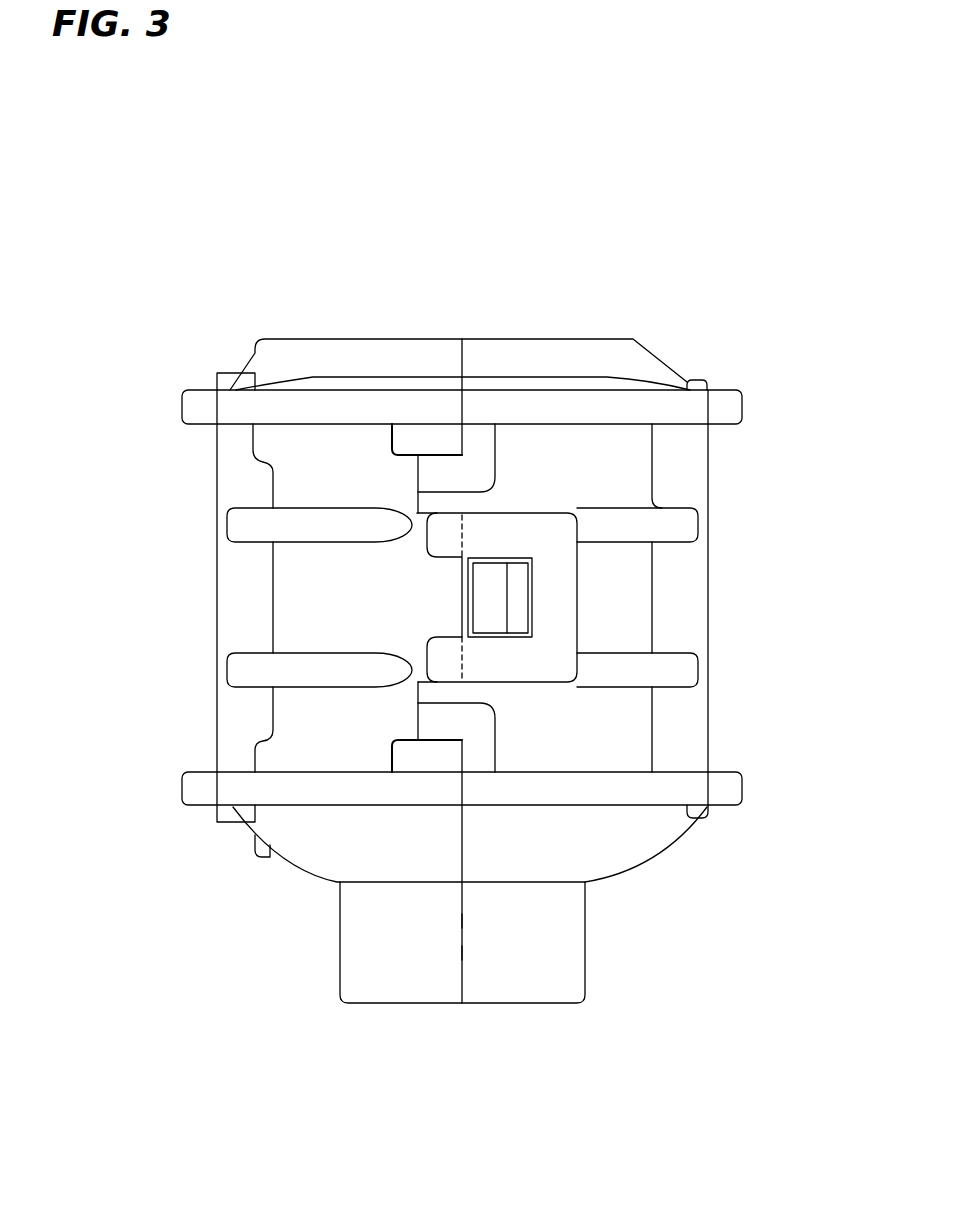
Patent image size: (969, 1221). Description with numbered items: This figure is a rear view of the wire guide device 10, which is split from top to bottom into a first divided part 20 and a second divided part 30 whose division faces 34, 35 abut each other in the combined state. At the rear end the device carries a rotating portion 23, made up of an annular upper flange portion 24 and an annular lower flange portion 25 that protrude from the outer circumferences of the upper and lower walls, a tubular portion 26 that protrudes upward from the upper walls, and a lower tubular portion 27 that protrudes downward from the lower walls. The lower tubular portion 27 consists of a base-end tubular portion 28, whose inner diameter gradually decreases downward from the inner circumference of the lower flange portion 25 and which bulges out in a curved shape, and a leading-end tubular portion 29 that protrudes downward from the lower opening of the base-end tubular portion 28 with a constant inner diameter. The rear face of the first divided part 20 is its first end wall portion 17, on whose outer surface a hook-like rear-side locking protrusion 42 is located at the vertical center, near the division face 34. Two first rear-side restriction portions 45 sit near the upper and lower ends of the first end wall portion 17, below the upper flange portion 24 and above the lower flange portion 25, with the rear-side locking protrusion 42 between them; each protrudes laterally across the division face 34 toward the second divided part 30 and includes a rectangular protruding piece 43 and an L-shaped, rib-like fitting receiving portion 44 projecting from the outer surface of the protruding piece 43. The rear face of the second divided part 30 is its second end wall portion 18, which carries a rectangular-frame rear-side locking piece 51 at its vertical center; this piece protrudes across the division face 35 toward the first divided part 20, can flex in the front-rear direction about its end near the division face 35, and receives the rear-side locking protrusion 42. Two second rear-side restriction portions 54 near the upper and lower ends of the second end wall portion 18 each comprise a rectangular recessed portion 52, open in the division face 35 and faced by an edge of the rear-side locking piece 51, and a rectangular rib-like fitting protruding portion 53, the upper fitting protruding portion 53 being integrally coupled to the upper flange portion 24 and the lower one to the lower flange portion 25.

The wire guide device 10 is at (455, 164).
The first end wall portion 17 is at (633, 727).
The second end wall portion 18 is at (292, 723).
The first divided part 20 is at (700, 570).
The rotating portion 23 is at (803, 310).
The upper flange portion 24 is at (728, 400).
The lower flange portion 25 is at (723, 793).
The tubular portion 26 is at (660, 362).
The lower tubular portion 27 is at (730, 883).
The base-end tubular portion 28 is at (613, 850).
The leading-end tubular portion 29 is at (570, 952).
The second divided part 30 is at (217, 622).
The division face 34 is at (462, 952).
The division face 35 is at (462, 920).
The rear-side locking protrusion 42 is at (518, 600).
The protruding piece 43 is at (420, 458).
The fitting receiving portion 44 is at (427, 481).
The first rear-side restriction portion 45 is at (381, 261).
The rear-side locking piece 51 is at (523, 537).
The recessed portion 52 is at (427, 507).
The fitting protruding portion 53 is at (423, 432).
The second rear-side restriction portion 54 is at (499, 259).